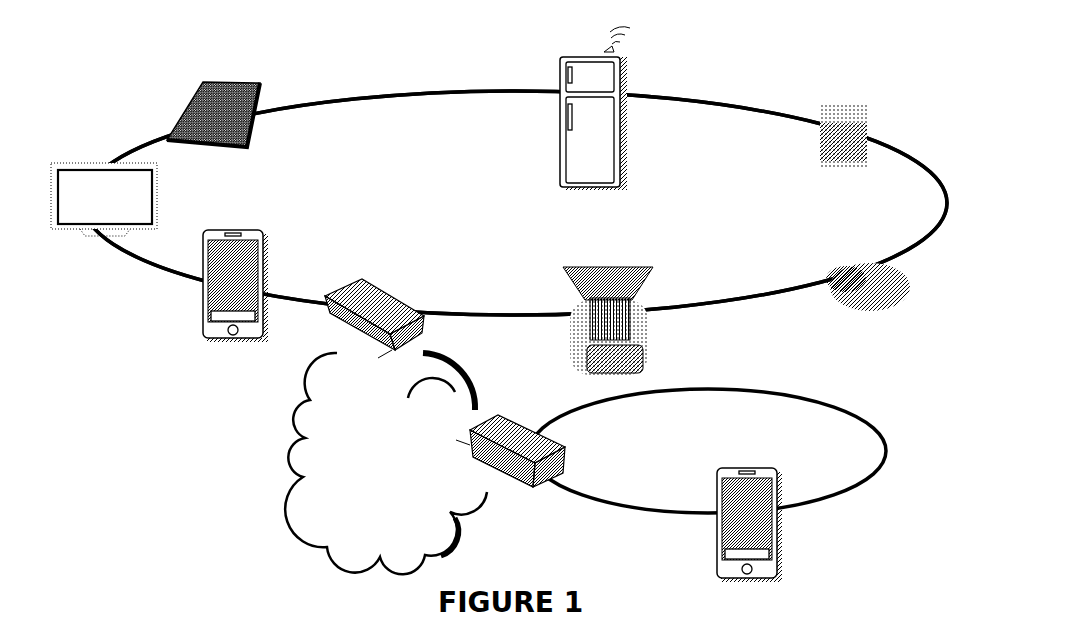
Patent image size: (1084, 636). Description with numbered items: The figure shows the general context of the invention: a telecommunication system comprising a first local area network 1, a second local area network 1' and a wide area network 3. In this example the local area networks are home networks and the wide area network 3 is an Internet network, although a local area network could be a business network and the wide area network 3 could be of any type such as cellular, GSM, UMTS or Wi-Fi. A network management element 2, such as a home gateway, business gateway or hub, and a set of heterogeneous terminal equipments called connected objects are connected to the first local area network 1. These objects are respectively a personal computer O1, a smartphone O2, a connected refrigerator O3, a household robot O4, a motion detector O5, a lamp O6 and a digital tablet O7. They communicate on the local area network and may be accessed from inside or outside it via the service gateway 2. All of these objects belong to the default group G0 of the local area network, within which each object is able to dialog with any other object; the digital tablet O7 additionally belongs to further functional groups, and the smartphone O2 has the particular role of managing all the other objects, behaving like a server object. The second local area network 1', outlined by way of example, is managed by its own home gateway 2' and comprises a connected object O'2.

The first local area network 1 is at (515, 164).
The default group G0 is at (429, 92).
The second local area network 1' is at (708, 417).
The network management element 2 is at (374, 285).
The home gateway 2' is at (510, 415).
The wide area network 3 is at (278, 468).
The personal computer O1 is at (115, 166).
The smartphone O2 is at (250, 231).
The connected refrigerator O3 is at (599, 57).
The household robot O4 is at (627, 267).
The motion detector O5 is at (832, 103).
The lamp O6 is at (862, 270).
The digital tablet O7 is at (188, 107).
The connected object O'2 is at (749, 495).